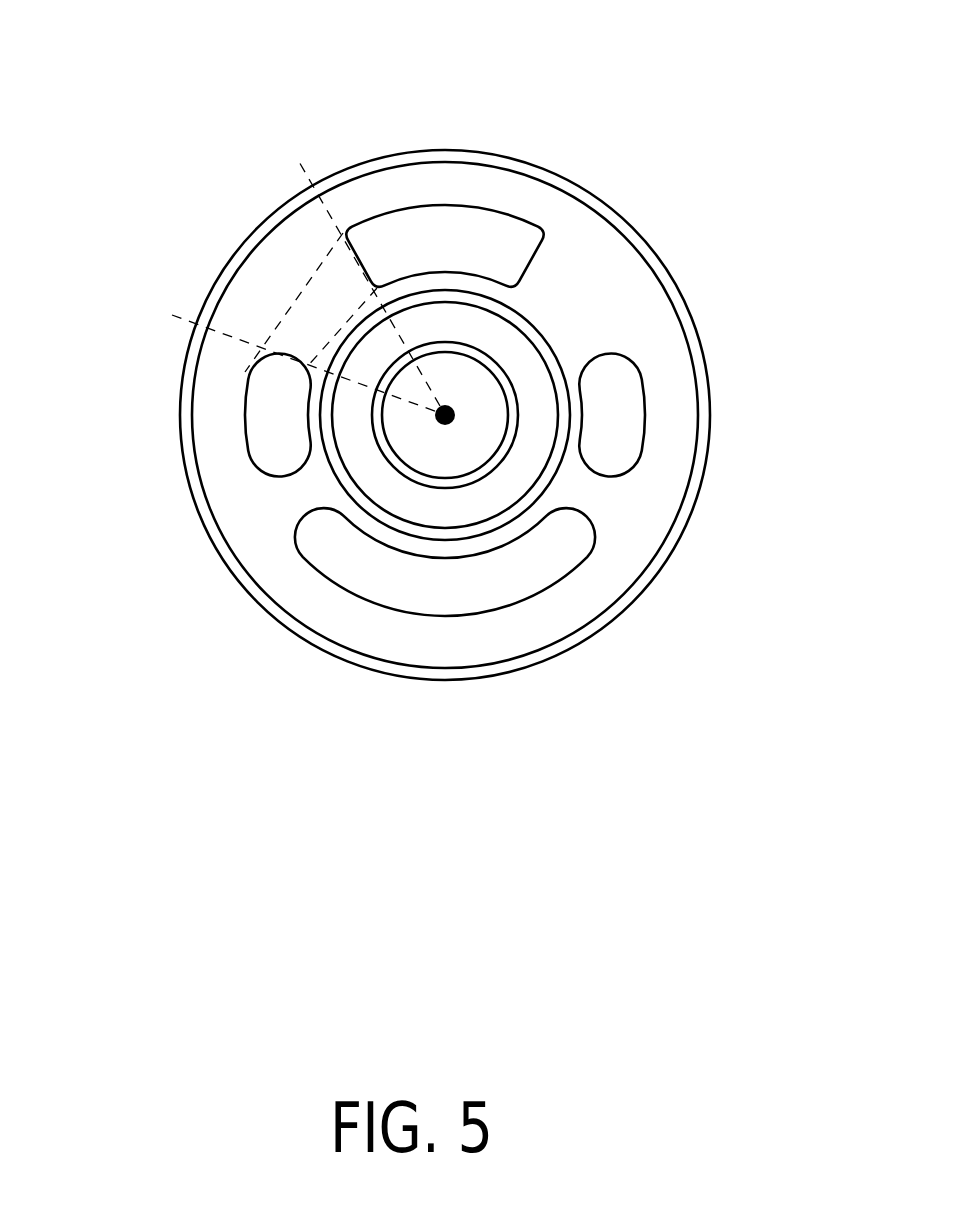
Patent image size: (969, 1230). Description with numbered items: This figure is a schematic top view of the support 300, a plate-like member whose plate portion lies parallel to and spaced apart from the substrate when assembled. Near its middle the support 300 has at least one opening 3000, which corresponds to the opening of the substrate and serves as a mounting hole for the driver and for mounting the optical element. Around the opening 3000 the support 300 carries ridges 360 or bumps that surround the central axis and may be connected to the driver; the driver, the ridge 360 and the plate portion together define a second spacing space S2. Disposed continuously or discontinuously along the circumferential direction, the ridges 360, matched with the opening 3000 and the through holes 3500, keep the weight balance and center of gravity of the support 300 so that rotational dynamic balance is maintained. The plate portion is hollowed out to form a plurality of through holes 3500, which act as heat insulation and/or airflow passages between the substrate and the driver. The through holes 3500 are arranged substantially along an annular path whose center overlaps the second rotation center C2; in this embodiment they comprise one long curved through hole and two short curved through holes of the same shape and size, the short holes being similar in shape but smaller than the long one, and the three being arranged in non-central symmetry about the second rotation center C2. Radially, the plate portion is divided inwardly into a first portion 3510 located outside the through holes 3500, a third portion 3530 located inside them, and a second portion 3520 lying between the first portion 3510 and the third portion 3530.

The support 300 is at (132, 42).
The opening 3000 is at (472, 353).
The third portion 3530 is at (380, 353).
The second portion 3520 is at (295, 313).
The first portion 3510 is at (235, 303).
The through hole 3500 is at (648, 398).
The ridge 360 is at (557, 183).
The second spacing space S2 is at (522, 362).
The second rotation center C2 is at (445, 426).